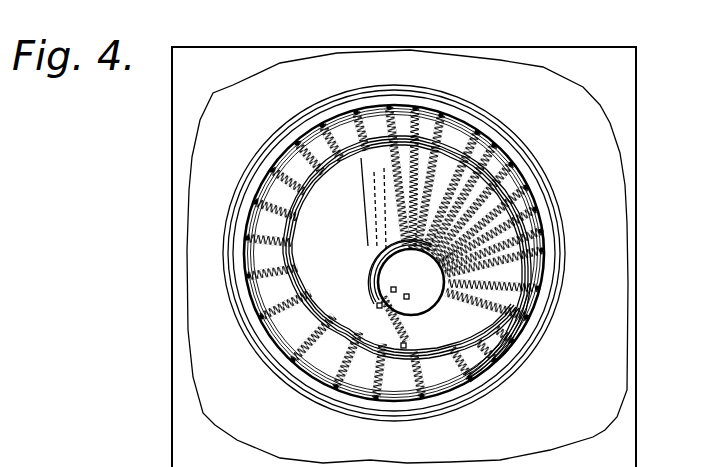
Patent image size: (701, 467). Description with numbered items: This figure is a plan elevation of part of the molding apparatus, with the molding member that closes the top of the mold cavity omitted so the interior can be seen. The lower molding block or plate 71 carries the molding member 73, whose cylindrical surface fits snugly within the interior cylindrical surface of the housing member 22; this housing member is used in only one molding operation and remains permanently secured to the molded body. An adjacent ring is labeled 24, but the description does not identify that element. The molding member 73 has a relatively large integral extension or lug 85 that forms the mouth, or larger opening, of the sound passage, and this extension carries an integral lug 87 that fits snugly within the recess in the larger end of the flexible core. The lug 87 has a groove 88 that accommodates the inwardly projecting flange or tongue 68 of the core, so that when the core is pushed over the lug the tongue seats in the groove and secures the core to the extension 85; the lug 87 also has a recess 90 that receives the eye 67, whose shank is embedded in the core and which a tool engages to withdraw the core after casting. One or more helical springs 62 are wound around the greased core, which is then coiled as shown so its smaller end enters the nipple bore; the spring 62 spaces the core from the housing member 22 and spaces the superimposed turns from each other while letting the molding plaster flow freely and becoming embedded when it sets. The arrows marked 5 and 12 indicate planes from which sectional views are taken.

The section line 5- 5 is at (337, 45).
The coil 12 is at (213, 342).
The housing member 22 is at (552, 218).
The inner casing 24 is at (566, 275).
The spring 62 is at (512, 180).
The eye 67 is at (450, 190).
The flange or tongue 68 is at (389, 105).
The lower molding block or plate 71 is at (633, 413).
The molding member 73 is at (618, 340).
The extension or lug 85 is at (388, 208).
The lug 87 is at (378, 199).
The groove 88 is at (375, 183).
The recess 90 is at (410, 176).